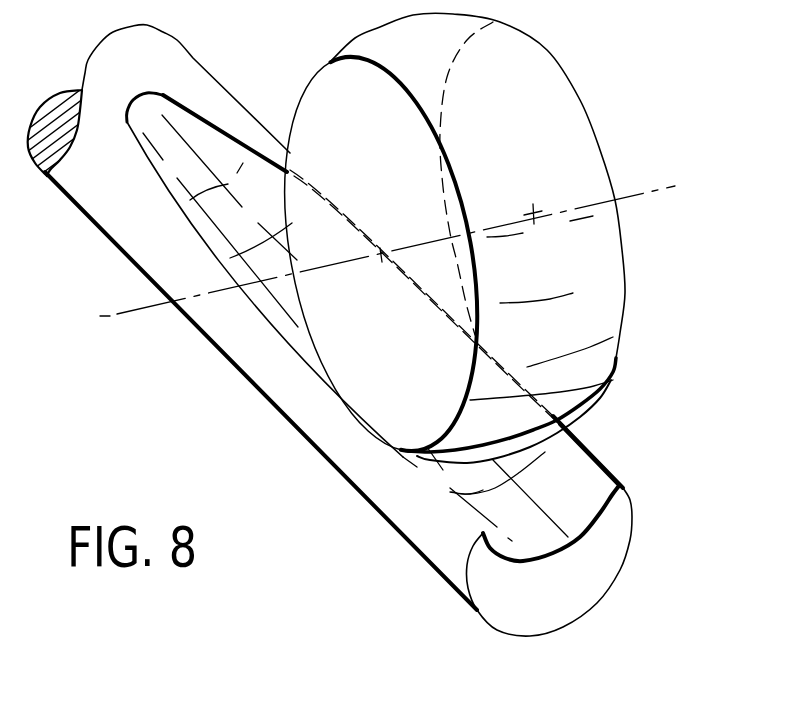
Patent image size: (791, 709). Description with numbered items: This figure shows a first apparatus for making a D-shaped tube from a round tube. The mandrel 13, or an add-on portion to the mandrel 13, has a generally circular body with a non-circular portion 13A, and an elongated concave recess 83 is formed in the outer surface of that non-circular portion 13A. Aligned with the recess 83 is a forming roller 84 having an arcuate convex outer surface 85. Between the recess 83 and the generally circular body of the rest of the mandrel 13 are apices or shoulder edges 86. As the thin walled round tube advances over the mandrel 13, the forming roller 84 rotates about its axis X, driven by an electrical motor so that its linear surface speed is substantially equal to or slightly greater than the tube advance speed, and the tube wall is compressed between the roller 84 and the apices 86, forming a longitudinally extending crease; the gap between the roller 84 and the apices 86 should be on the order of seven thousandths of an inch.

The mandrel 13 is at (175, 67).
The non-circular portion 13A is at (380, 500).
The forming roller 84 is at (357, 365).
The arcuate convex outer surface 85 is at (593, 260).
The elongated concave recess 83 is at (592, 507).
The apices or shoulder edges 86 is at (598, 464).